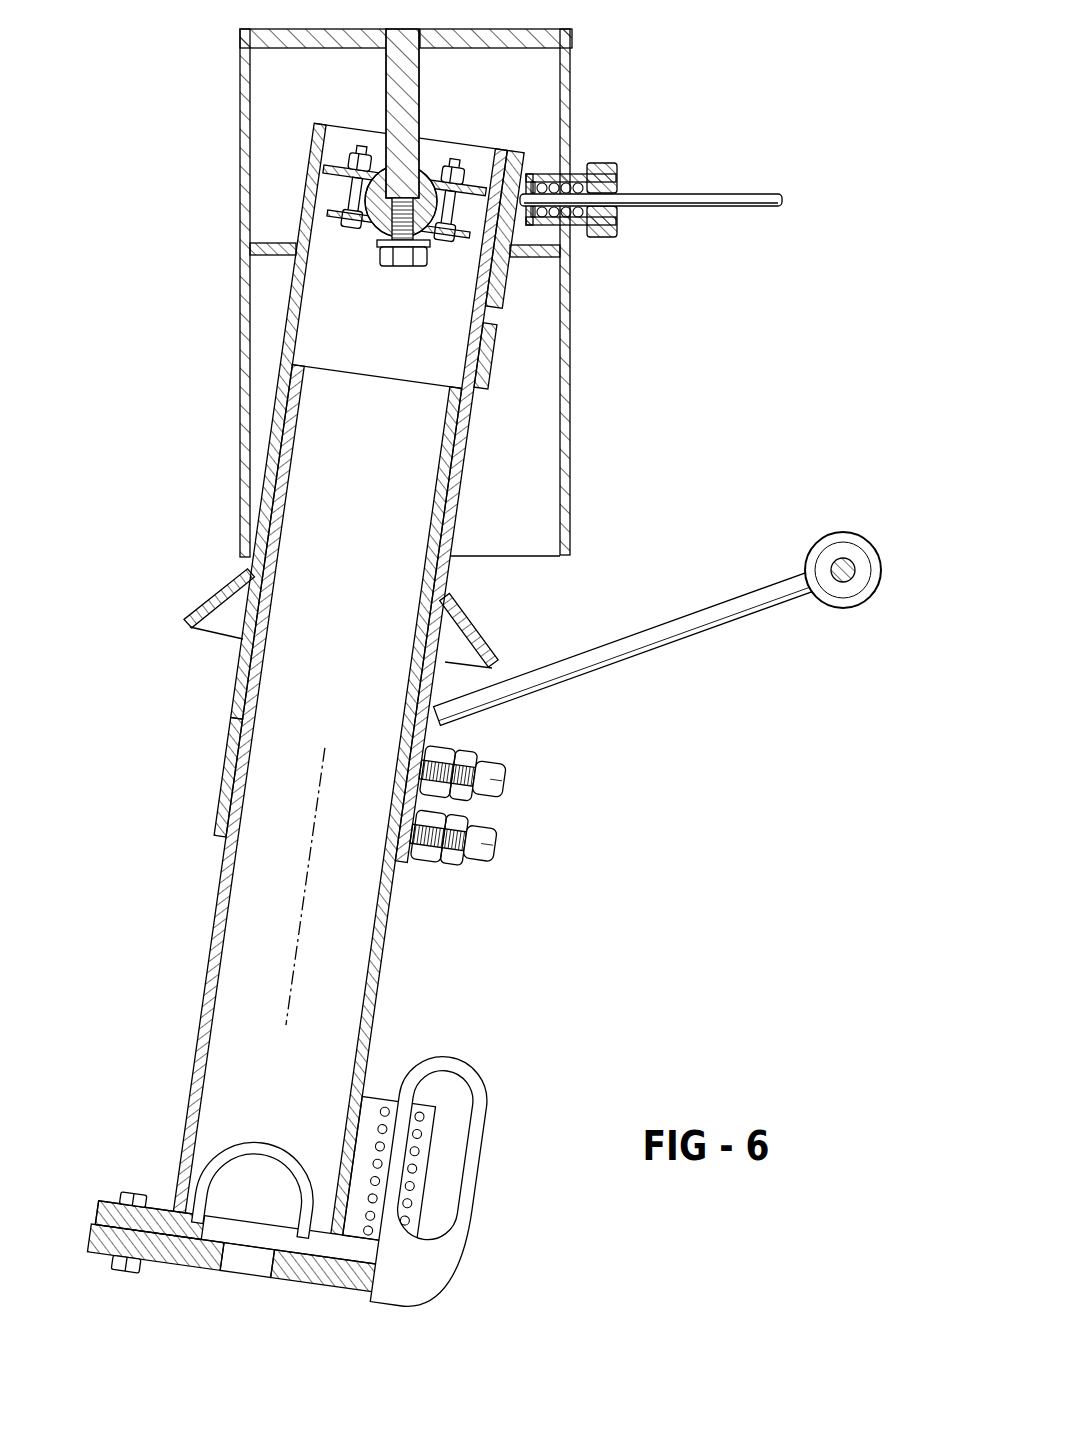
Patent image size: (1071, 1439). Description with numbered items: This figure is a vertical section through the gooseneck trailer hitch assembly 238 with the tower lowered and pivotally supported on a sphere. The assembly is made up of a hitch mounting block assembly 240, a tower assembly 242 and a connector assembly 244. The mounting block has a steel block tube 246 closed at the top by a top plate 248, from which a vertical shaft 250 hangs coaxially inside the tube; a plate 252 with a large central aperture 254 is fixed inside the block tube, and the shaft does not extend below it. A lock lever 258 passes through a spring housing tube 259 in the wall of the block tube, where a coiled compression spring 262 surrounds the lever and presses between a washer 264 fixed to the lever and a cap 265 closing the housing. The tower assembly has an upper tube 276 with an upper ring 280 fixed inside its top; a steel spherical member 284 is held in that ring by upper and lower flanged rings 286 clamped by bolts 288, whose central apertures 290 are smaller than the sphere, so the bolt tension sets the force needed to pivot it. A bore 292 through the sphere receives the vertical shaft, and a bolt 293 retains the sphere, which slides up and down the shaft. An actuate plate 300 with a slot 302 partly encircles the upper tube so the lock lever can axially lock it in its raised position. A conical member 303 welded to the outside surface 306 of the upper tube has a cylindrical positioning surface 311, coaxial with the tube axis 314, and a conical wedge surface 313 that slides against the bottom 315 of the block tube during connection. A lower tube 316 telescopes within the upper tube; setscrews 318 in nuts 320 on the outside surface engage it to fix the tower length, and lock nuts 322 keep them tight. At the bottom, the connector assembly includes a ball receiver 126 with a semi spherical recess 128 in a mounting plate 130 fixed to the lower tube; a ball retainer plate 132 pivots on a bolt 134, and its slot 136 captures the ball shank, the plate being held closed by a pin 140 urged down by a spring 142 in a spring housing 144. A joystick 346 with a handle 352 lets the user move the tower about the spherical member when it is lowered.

The ball receiver 126 is at (226, 1147).
The semi spherical recess 128 is at (283, 1265).
The mounting plate 130 is at (98, 1218).
The ball retainer plate 132 is at (100, 1240).
The bolt 134 is at (128, 1273).
The slot 136 is at (272, 1253).
The pin 140 is at (408, 1300).
The spring 142 is at (424, 1148).
The spring housing 144 is at (430, 1167).
The gooseneck trailer hitch assembly 238 is at (624, 398).
The hitch mounting block assembly 240 is at (648, 72).
The tower assembly 242 is at (205, 737).
The connector assembly 244 is at (494, 1099).
The block tube 246 is at (240, 393).
The top plate 248 is at (248, 37).
The vertical shaft 250 is at (562, 38).
The plate 252 is at (505, 283).
The central aperture 254 is at (293, 243).
The lock lever 258 is at (722, 193).
The spring housing tube 259 is at (582, 227).
The coiled compression spring 262 is at (583, 172).
The washer 264 is at (576, 182).
The cap 265 is at (620, 168).
The upper tube 276 is at (216, 809).
The upper ring 280 is at (317, 145).
The spherical member 284 is at (421, 135).
The flanged rings 286 is at (330, 170).
The bolts 288 is at (458, 168).
The central apertures 290 is at (350, 207).
The bore 292 is at (392, 168).
The bolt 293 is at (385, 262).
The actuate plate 300 is at (513, 292).
The slot 302 is at (493, 312).
The conical member 303 is at (468, 630).
The outside surface 306 is at (237, 673).
The cylindrical tube positioning surface 311 is at (195, 628).
The conical wedge surface 313 is at (215, 595).
The tube axis 314 is at (300, 868).
The bottom 315 is at (548, 560).
The lower tube 316 is at (204, 1000).
The setscrews 318 is at (497, 782).
The nuts 320 is at (423, 863).
The lock nuts 322 is at (458, 808).
The joystick 346 is at (690, 640).
The handle 352 is at (848, 533).